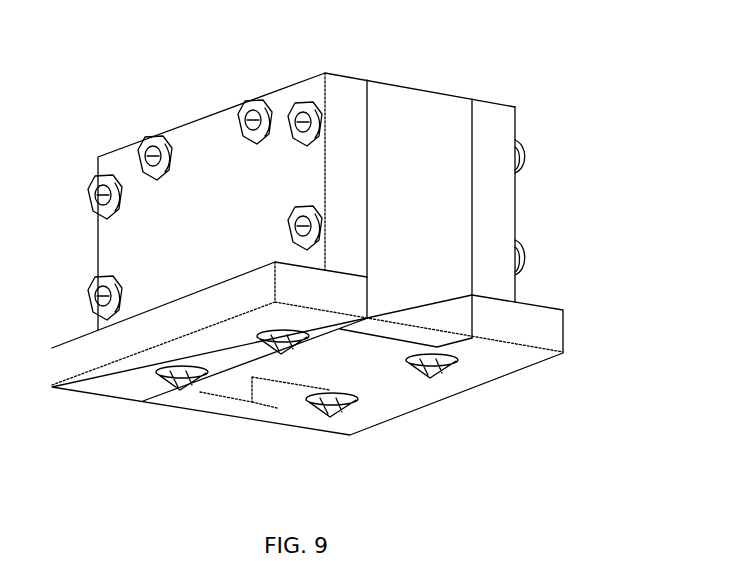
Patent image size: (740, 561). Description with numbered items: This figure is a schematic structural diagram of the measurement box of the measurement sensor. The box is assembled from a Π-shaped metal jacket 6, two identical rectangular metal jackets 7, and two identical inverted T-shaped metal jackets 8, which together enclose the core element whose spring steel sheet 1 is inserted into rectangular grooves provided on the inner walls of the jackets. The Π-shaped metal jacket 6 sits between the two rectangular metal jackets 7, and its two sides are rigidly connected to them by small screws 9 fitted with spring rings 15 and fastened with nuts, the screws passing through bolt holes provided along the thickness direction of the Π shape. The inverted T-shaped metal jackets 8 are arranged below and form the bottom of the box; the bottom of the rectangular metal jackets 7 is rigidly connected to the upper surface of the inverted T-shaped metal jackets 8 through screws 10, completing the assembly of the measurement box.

The spring steel sheet 1 is at (330, 340).
The Π-shaped metal jacket 6 is at (417, 127).
The rectangular metal jacket 7 is at (492, 137).
The inverted T-shaped metal jacket 8 is at (128, 333).
The small screw 9 is at (247, 110).
The screw 10 is at (172, 388).
The spring ring 15 is at (272, 117).